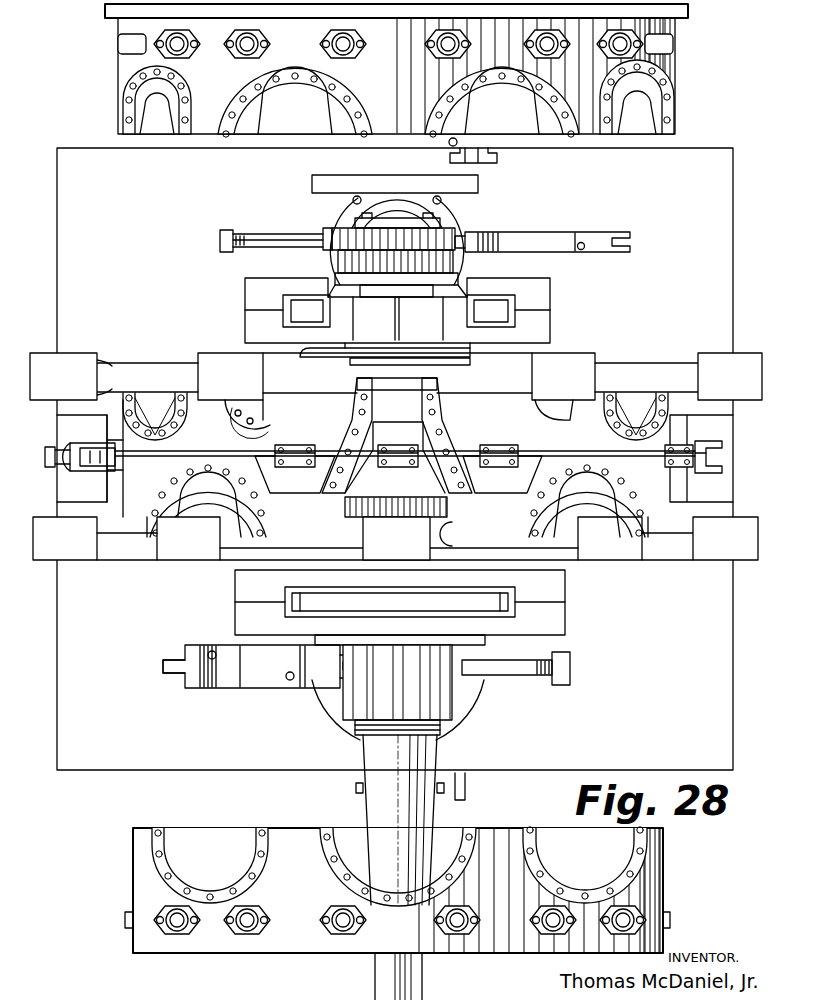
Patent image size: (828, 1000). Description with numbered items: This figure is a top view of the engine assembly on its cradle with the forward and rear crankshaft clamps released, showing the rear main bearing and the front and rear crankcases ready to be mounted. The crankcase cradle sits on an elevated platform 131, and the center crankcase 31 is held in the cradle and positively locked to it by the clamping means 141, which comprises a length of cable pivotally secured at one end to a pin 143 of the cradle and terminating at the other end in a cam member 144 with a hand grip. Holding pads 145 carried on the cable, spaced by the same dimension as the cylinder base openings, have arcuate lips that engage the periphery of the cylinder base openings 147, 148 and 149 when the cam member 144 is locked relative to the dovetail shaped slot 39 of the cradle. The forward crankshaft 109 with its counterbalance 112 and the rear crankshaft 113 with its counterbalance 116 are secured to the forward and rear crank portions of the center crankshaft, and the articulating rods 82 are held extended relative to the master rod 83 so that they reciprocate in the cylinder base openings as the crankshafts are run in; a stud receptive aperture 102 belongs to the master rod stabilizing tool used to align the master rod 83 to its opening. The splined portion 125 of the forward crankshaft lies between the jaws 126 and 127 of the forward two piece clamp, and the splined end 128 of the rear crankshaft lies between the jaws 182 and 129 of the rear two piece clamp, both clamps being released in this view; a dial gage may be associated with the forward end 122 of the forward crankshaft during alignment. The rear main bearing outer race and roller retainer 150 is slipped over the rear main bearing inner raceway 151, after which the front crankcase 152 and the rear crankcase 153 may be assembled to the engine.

The rear crankcase 153 is at (680, 85).
The front crankcase 152 is at (660, 896).
The elevated platform 131 is at (57, 715).
The rear main bearing outer race and roller retainer 150 is at (478, 185).
The rear crankshaft 113 is at (353, 224).
The splined end 128 is at (443, 240).
The rear main bearing inner raceway 151 is at (457, 262).
The jaw 182 is at (318, 230).
The jaw 129 is at (548, 232).
The counterbalance 116 is at (550, 292).
The articulating rod 82 is at (78, 357).
The master rod 83 is at (215, 356).
The cylinder base opening 148 is at (500, 412).
The cylinder base opening 149 is at (272, 413).
The clamping means 141 is at (580, 388).
The holding pad 145 is at (413, 440).
The dovetail shaped slot 39 is at (722, 452).
The pin 143 is at (68, 471).
The cam member 144 is at (722, 472).
The center crankcase 31 is at (148, 487).
The cylinder base opening 147 is at (452, 545).
The counterbalance 112 is at (565, 622).
The stud receptive aperture 102 is at (470, 643).
The jaw 127 is at (242, 680).
The splined portion 125 is at (445, 705).
The jaw 126 is at (482, 683).
The forward crankshaft 109 is at (435, 758).
The forward end 122 is at (375, 987).